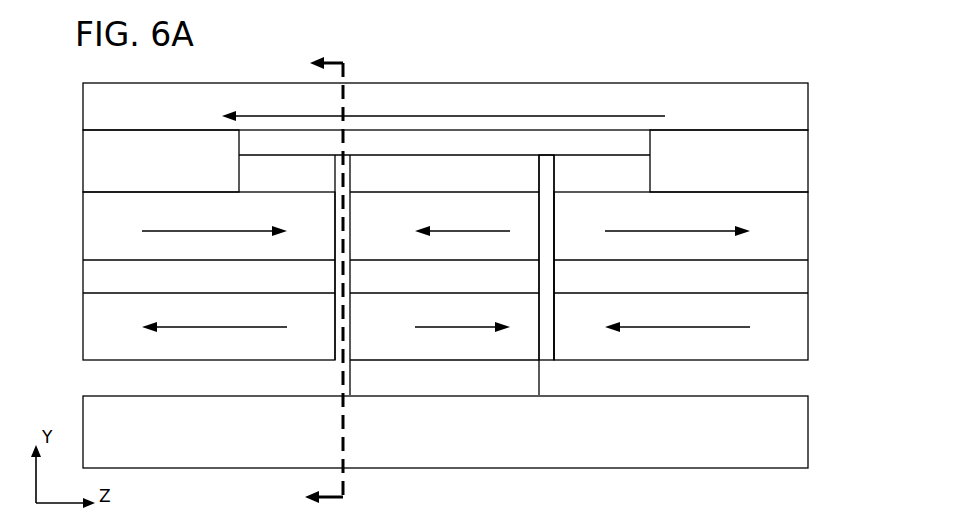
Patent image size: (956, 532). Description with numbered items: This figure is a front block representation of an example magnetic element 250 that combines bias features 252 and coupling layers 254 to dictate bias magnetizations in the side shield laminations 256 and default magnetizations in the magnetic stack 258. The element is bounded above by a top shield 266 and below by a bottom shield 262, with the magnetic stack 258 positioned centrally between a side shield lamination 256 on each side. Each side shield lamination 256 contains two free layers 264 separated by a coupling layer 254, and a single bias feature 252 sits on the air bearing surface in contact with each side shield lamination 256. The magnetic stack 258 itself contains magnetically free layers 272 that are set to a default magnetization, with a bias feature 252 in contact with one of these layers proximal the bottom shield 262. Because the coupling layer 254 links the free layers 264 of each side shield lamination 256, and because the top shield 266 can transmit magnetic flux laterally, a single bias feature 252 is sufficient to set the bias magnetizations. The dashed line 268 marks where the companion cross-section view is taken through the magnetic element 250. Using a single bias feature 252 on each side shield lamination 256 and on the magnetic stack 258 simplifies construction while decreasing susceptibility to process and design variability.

The magnetic element 250 is at (764, 48).
The bias feature 252 is at (83, 180).
The coupling layer 254 is at (83, 283).
The side shield lamination 256 is at (81, 364).
The magnetic stack 258 is at (543, 363).
The bottom shield 262 is at (445, 432).
The free layers of the side shield laminations 264 is at (445, 276).
The top shield 266 is at (445, 106).
The line 268 is at (342, 282).
The magnetically free layers 272 is at (434, 276).